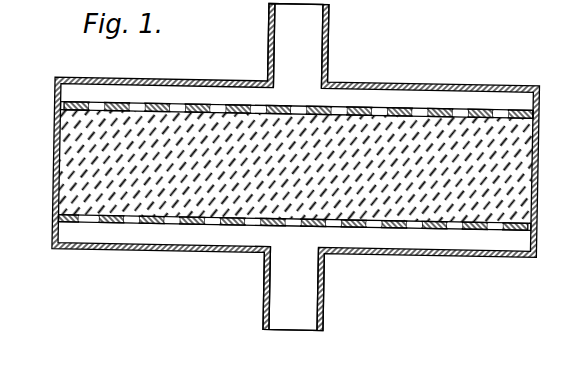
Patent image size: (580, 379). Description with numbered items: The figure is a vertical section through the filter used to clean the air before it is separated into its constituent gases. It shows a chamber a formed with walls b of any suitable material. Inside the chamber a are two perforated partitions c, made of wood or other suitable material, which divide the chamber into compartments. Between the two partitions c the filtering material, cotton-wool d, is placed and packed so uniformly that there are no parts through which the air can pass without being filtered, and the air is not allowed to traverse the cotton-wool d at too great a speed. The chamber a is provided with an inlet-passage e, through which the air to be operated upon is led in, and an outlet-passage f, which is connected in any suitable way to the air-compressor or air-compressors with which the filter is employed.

The chamber a is at (295, 167).
The walls b is at (549, 174).
The perforated partitions c is at (279, 104).
The cotton-wool d is at (226, 136).
The inlet-passage e is at (298, 45).
The outlet-passage f is at (294, 288).